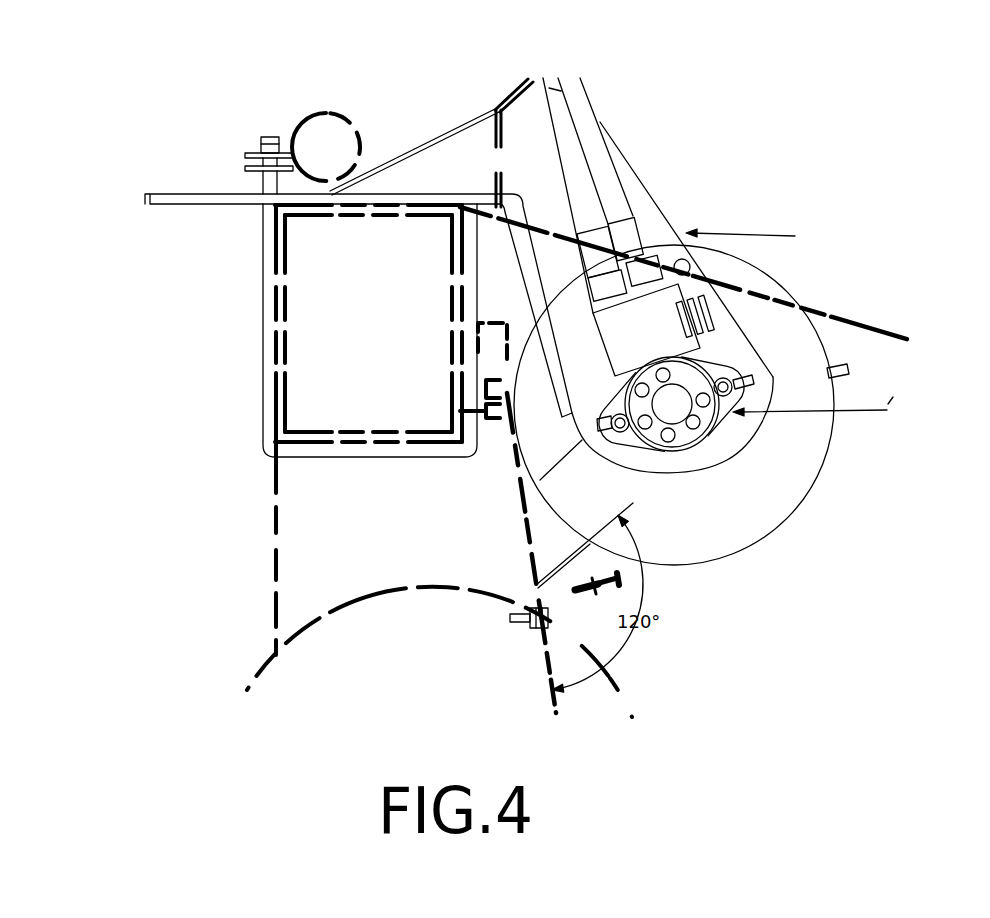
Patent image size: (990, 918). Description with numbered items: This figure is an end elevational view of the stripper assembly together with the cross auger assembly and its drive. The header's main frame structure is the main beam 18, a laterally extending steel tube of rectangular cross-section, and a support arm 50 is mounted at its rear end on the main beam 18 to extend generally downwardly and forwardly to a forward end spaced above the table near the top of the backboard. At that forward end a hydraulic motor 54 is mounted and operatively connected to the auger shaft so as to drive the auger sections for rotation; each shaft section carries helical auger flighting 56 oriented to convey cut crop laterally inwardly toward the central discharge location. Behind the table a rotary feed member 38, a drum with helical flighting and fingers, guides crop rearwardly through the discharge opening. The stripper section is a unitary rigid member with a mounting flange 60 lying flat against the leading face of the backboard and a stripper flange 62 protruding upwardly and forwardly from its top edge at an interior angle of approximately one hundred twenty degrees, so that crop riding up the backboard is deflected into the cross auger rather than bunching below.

The main beam 18 is at (293, 321).
The rotary feed member 38 is at (345, 600).
The support arm 50 is at (444, 128).
The hydraulic motor 54 is at (703, 358).
The helical auger flighting 56 is at (814, 455).
The mounting flange 60 is at (512, 612).
The stripper flange 62 is at (565, 550).